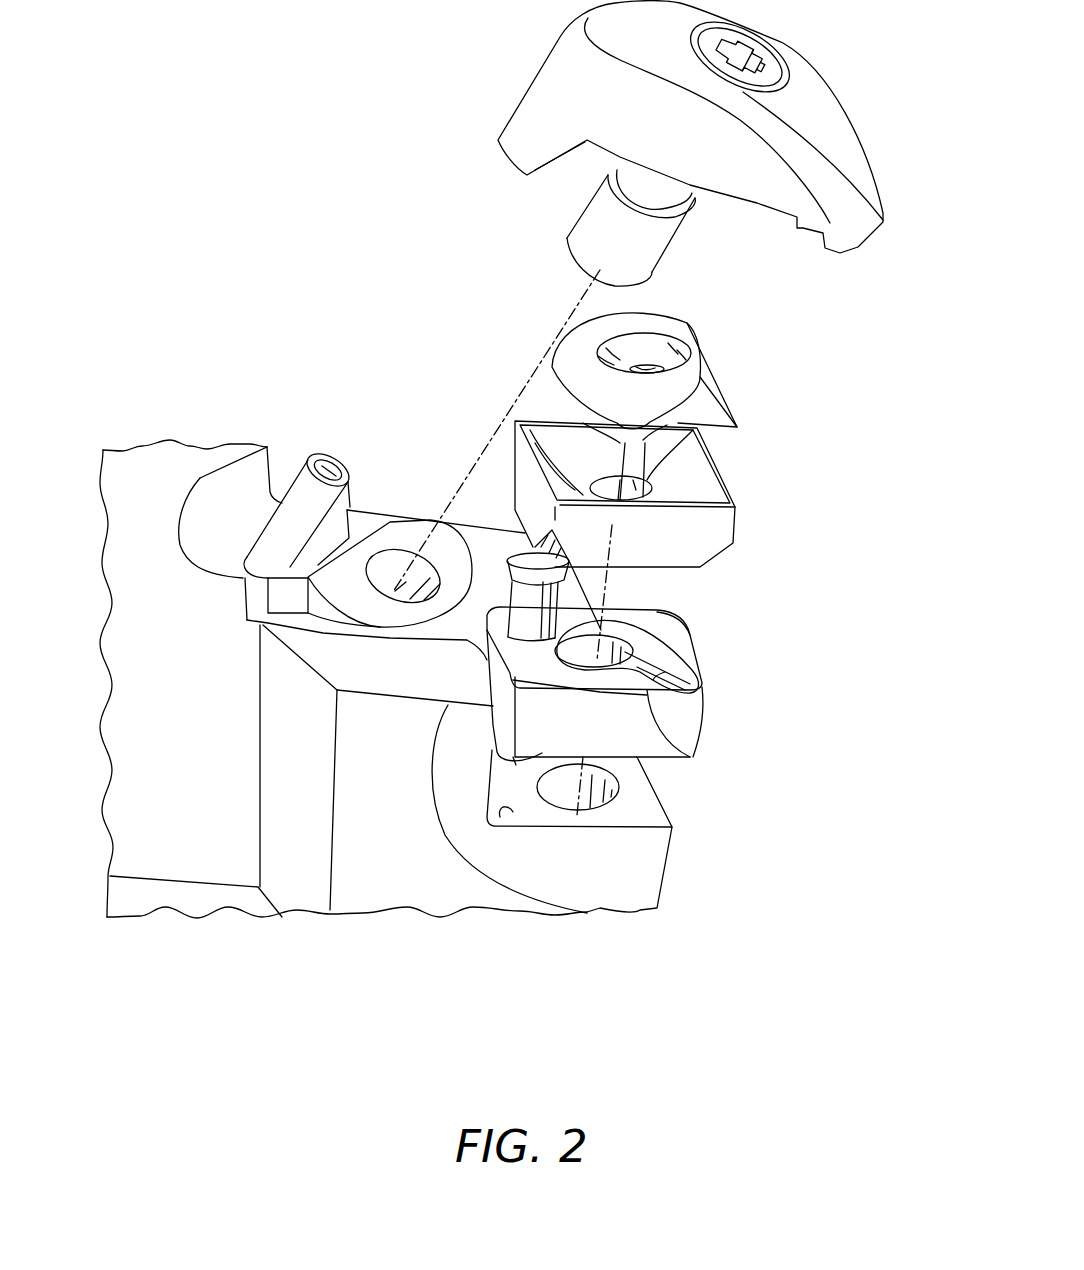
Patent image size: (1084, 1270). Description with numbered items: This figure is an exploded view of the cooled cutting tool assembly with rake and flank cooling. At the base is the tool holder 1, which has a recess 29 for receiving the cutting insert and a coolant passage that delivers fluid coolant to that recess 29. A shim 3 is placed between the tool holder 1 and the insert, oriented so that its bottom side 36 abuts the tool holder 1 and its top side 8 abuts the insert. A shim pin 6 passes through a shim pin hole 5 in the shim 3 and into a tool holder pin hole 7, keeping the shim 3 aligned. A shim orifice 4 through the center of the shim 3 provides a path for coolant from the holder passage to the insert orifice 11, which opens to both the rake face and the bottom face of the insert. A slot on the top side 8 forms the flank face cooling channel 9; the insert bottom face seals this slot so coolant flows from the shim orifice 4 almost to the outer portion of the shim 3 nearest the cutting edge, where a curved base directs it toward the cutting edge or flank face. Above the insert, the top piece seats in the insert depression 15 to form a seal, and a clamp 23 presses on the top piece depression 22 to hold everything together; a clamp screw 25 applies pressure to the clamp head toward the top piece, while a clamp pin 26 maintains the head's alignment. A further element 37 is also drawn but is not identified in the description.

The tool holder 1 is at (393, 785).
The shim 3 is at (704, 734).
The shim orifice 4 is at (653, 675).
The shim pin hole 5 is at (660, 640).
The shim pin 6 is at (571, 567).
The tool holder pin hole 7 is at (513, 757).
The top side of shim 8 is at (660, 630).
The flank face cooling channel 9 is at (652, 757).
The insert orifice 11 is at (690, 458).
The insert depression 15 is at (690, 485).
The top piece depression 22 is at (657, 343).
The clamp 23 is at (810, 67).
The clamp screw 25 is at (572, 229).
The clamp pin 26 is at (297, 482).
The recess 29 is at (513, 812).
The bottom side of shim 36 is at (645, 757).
The bore in lever 37 is at (388, 560).